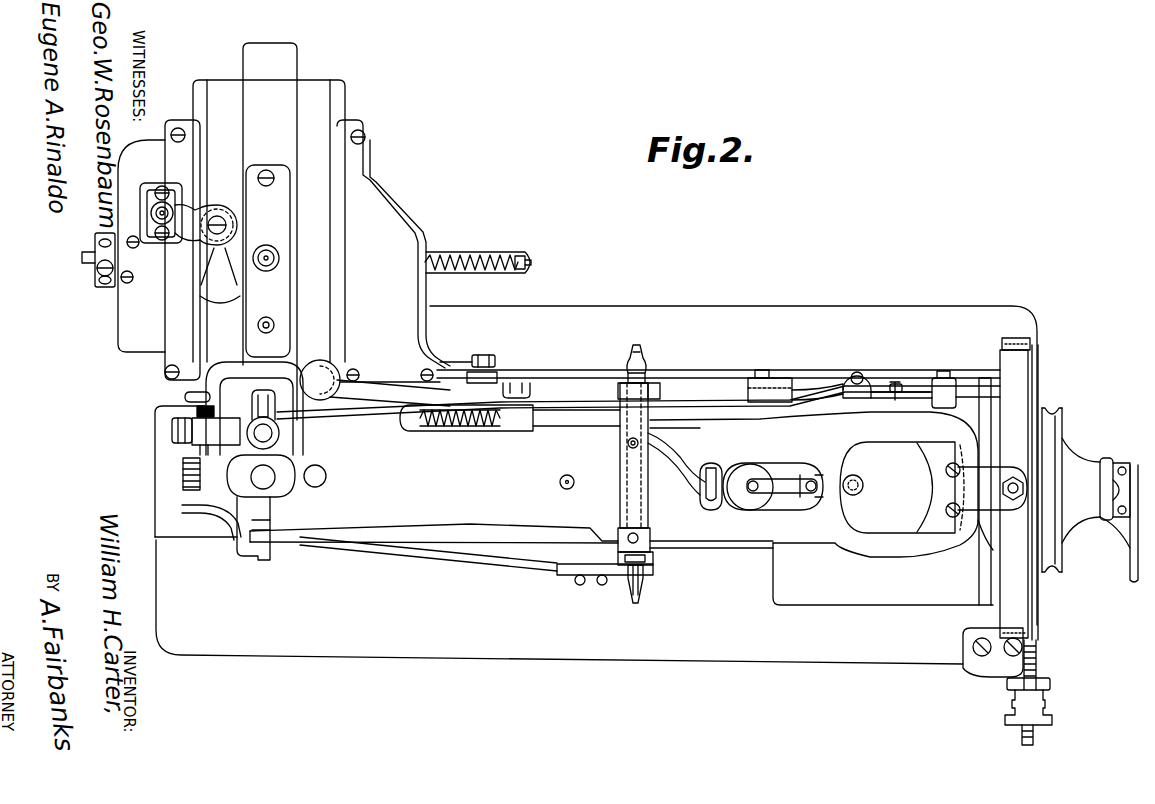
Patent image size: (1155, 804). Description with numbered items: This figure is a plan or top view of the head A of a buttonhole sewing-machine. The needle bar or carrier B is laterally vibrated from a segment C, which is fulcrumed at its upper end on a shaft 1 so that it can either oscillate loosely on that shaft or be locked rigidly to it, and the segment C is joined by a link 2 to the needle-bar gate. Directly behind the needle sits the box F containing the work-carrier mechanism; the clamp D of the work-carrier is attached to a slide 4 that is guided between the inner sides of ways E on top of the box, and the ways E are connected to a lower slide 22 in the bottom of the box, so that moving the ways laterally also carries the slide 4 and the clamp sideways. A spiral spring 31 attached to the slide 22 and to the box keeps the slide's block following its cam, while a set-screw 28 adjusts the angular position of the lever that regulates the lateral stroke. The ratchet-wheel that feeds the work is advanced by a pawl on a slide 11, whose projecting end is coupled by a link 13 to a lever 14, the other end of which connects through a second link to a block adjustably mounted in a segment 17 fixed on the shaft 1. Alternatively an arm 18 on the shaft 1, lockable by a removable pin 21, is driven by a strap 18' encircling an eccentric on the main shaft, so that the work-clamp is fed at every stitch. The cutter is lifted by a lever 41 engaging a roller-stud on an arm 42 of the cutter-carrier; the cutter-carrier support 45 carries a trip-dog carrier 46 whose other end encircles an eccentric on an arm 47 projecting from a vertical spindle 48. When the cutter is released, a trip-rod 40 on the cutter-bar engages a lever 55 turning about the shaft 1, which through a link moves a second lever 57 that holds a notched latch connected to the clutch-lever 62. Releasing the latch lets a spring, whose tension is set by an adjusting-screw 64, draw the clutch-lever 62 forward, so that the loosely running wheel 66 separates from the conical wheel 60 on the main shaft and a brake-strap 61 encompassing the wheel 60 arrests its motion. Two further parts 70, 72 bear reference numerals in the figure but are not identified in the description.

The shaft 1 is at (638, 498).
The link 2 is at (446, 555).
The slide 4 is at (316, 231).
The slide 11 is at (455, 370).
The link 13 is at (586, 366).
The lever 14 is at (777, 386).
The segment 17 is at (653, 385).
The arm 18 is at (685, 479).
The strap 18' is at (769, 475).
The removable pin 21 is at (627, 445).
The lower slide 22 is at (95, 241).
The set-screw 28 is at (97, 278).
The spiral spring 31 is at (480, 256).
The trip-rod 40 is at (280, 433).
The lever 41 is at (582, 403).
The arm 42 is at (333, 385).
The cutter-carrier support 45 is at (185, 398).
The trip-dog carrier 46 is at (218, 300).
The arm 47 is at (203, 208).
The spindle 48 is at (150, 214).
The lever 55 is at (556, 423).
The second lever 57 is at (965, 395).
The conical wheel 60 is at (1034, 358).
The brake-strap 61 is at (1004, 488).
The clutch-lever 62 is at (1130, 554).
The adjusting-screw 64 is at (1040, 672).
The second wheel 66 is at (1041, 398).
The hand wheel 70 is at (1054, 443).
The thumb nut 72 is at (170, 432).
The head A is at (596, 485).
The needle bar B is at (275, 478).
The segment C is at (652, 560).
The clamp D is at (270, 231).
The ways E is at (426, 207).
The box F is at (180, 124).